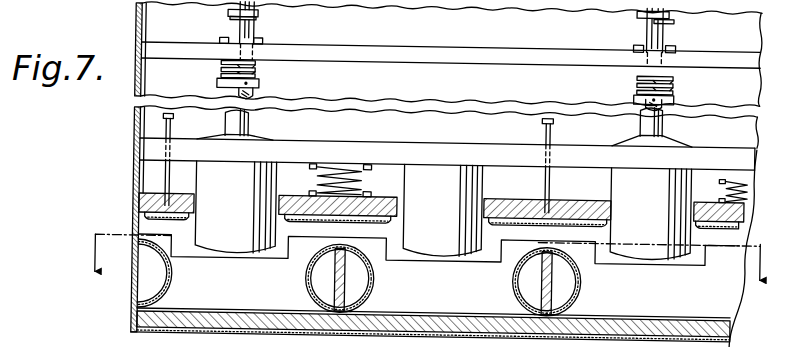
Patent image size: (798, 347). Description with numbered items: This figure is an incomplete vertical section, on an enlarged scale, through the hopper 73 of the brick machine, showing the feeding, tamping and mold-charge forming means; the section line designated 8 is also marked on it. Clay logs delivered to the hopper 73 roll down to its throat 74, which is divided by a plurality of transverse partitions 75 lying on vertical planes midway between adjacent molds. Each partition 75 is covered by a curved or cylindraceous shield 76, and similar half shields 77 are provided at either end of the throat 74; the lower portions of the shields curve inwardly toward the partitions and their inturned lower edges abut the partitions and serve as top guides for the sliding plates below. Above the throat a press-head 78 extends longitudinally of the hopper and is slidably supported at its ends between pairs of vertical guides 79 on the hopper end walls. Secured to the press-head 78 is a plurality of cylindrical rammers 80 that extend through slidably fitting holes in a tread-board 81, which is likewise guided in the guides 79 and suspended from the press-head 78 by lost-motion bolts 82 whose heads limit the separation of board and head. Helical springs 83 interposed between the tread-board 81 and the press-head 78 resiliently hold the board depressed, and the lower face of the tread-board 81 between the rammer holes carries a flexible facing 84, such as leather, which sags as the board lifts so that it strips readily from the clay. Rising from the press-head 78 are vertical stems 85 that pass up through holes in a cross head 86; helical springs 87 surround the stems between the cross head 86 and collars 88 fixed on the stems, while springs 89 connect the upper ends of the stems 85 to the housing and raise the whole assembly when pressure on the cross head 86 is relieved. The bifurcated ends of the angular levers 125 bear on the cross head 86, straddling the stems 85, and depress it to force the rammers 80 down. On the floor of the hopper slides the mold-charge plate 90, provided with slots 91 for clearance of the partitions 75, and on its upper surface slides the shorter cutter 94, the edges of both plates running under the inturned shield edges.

The section line 8- 8 is at (423, 275).
The hopper 73 is at (452, 55).
The throat 74 is at (447, 130).
The transverse partitions 75 is at (336, 283).
The cylindraceous shield 76 is at (377, 274).
The half shields 77 is at (164, 275).
The press-head 78 is at (447, 154).
The vertical guides 79 is at (141, 68).
The rammers 80 is at (443, 210).
The tread-board 81 is at (570, 206).
The bolts 82 is at (162, 117).
The helical springs 83 is at (366, 181).
The facing 84 is at (313, 216).
The vertical stems 85 is at (236, 23).
The cross head 86 is at (492, 52).
The helical springs 87 is at (256, 66).
The collars 88 is at (259, 82).
The springs 89 is at (257, 11).
The mold-charge plate 90 is at (441, 316).
The slots 91 is at (366, 310).
The cutter 94 is at (231, 311).
The angular levers 125 is at (261, 36).